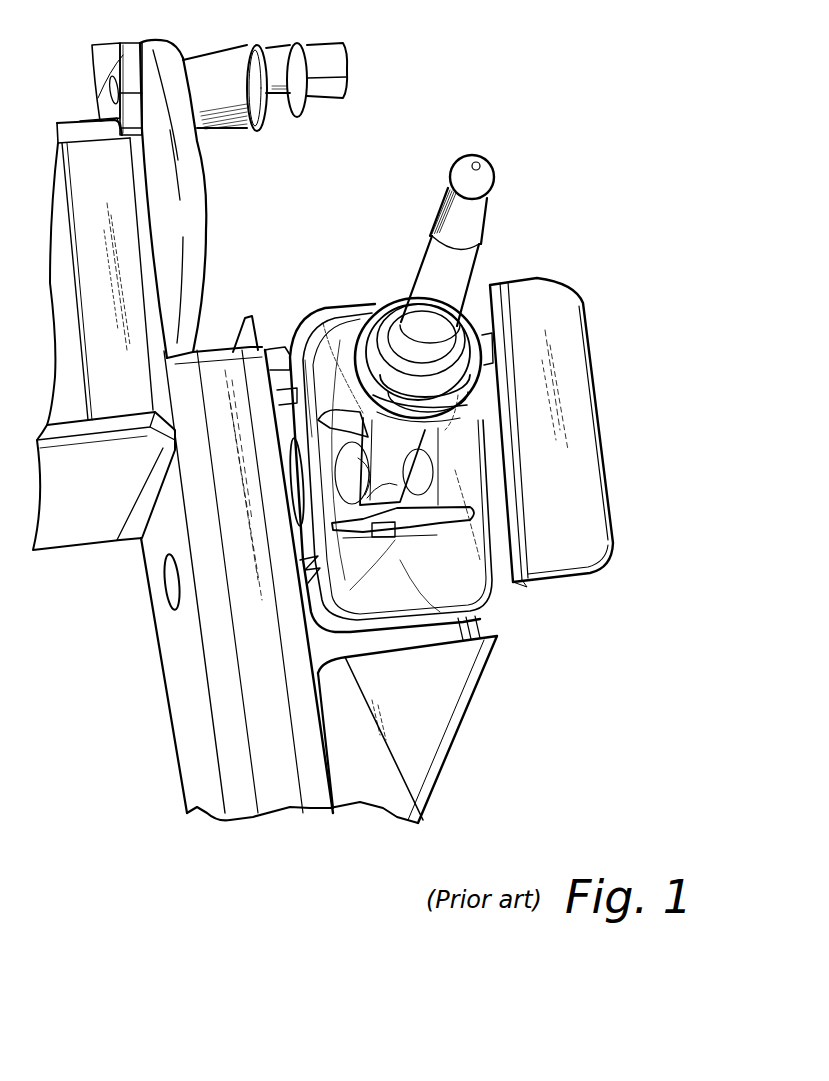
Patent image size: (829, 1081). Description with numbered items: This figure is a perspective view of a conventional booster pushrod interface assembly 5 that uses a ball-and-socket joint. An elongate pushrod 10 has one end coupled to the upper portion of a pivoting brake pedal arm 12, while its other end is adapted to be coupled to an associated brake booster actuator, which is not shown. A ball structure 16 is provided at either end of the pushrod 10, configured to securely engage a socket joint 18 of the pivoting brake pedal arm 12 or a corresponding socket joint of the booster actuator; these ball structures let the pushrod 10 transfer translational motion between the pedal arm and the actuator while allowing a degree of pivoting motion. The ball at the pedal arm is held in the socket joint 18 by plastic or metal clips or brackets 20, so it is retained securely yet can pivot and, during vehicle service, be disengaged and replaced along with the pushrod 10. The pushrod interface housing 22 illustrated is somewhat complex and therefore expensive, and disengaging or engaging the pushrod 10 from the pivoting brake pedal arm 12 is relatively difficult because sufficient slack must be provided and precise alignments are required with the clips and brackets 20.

The booster pushrod interface assembly 5 is at (481, 446).
The pushrod 10 is at (485, 197).
The pivoting brake pedal arm 12 is at (182, 657).
The ball structure 16 is at (468, 155).
The socket joint 18 is at (369, 575).
The clips or brackets 20 is at (437, 547).
The pushrod interface housing 22 is at (507, 447).